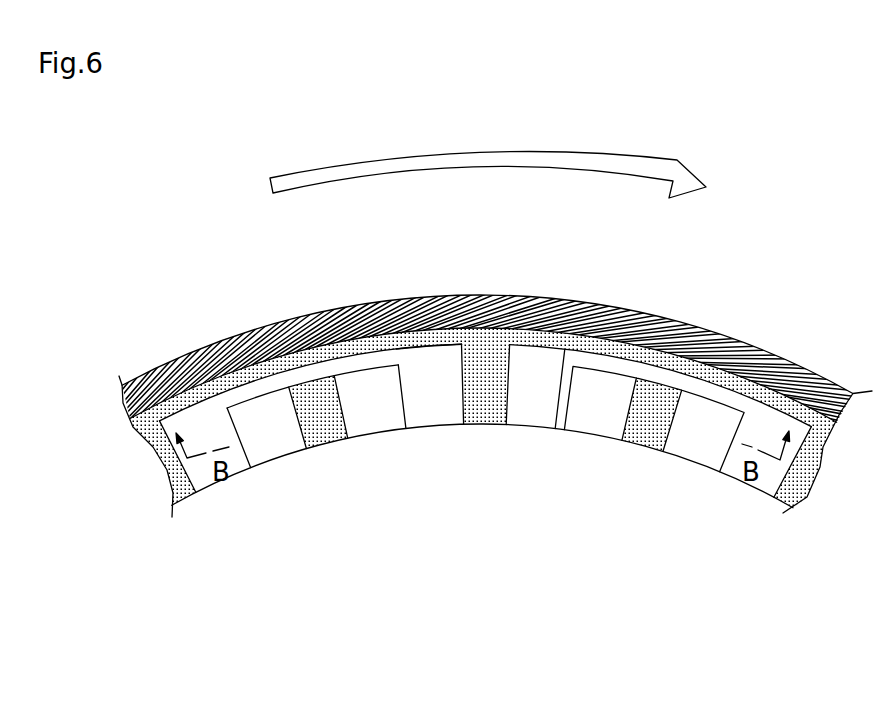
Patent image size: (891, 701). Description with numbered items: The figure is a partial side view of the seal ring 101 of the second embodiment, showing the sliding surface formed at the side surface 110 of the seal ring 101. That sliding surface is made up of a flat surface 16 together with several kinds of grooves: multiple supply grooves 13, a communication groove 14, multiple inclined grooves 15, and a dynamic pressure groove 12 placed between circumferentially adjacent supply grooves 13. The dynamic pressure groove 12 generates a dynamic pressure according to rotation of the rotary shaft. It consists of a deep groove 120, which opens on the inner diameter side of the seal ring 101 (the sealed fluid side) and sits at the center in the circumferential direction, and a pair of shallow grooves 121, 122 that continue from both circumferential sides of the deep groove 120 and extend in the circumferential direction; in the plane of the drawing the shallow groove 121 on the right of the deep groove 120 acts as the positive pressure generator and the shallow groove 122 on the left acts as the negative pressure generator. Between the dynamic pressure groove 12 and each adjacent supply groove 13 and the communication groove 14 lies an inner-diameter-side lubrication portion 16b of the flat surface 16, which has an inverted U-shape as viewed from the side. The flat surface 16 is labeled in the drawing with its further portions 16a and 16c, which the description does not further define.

The seal ring 101 is at (244, 300).
The side surface 110 is at (322, 373).
The dynamic pressure groove 12 is at (319, 493).
The deep groove 120 is at (332, 432).
The shallow groove 121 is at (388, 413).
The shallow groove 122 is at (286, 452).
The supply groove 13 is at (509, 379).
The communication groove 14 is at (427, 344).
The inclined groove 15 is at (423, 299).
The flat surface 16 is at (483, 397).
The outer resin portion 16a is at (533, 333).
The inner-diameter-side lubrication portion 16b is at (536, 402).
The end resin portion 16c is at (653, 313).